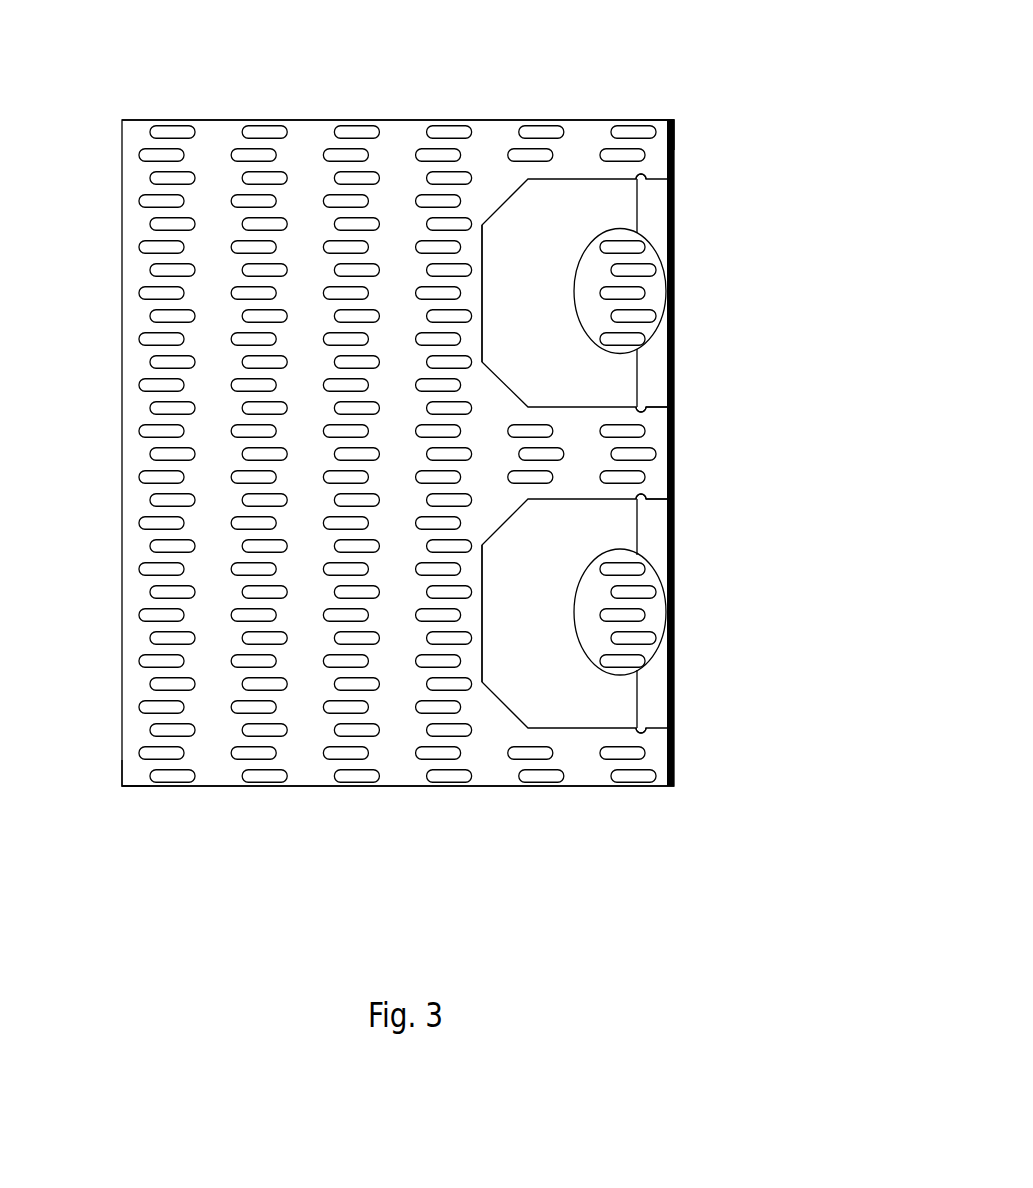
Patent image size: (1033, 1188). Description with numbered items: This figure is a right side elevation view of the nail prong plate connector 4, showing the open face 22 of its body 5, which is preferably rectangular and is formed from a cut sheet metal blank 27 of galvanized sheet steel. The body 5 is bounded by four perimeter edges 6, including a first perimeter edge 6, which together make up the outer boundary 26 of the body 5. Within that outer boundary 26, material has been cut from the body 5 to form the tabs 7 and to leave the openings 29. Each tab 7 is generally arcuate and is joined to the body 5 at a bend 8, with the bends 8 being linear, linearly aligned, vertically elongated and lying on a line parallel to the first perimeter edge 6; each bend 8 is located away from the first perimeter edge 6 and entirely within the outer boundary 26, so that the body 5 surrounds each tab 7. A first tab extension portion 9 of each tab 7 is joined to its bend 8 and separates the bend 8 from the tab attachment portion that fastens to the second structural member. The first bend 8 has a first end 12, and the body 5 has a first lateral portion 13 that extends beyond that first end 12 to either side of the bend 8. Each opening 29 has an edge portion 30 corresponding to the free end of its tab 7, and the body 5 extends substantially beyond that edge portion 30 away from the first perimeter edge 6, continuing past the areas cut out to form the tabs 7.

The connector 4 is at (140, 118).
The body 5 is at (178, 118).
The first perimeter edge 6 is at (676, 141).
The first tab 7 is at (664, 412).
The first bend 8 is at (638, 214).
The first tab extension portion 9 is at (650, 188).
The first end 12 is at (633, 173).
The first lateral portion 13 is at (657, 157).
The open face 22 is at (217, 777).
The outer boundary 26 is at (403, 787).
The sheet metal blank 27 is at (387, 118).
The openings 29 is at (528, 178).
The edge portion 30 is at (484, 270).